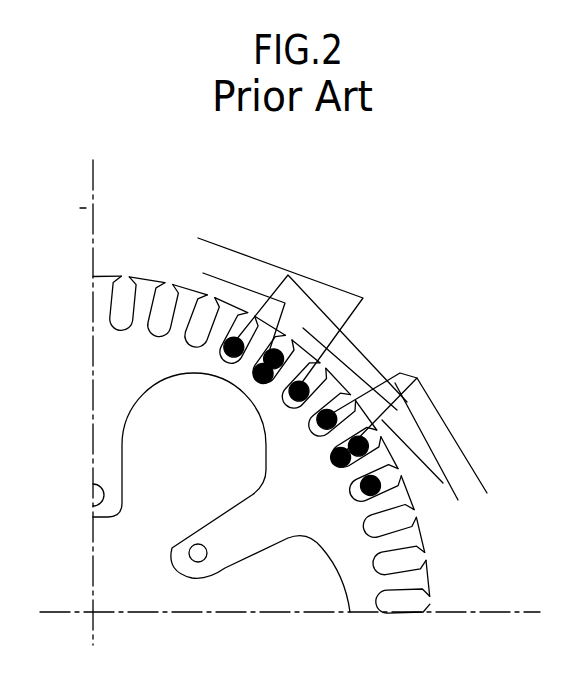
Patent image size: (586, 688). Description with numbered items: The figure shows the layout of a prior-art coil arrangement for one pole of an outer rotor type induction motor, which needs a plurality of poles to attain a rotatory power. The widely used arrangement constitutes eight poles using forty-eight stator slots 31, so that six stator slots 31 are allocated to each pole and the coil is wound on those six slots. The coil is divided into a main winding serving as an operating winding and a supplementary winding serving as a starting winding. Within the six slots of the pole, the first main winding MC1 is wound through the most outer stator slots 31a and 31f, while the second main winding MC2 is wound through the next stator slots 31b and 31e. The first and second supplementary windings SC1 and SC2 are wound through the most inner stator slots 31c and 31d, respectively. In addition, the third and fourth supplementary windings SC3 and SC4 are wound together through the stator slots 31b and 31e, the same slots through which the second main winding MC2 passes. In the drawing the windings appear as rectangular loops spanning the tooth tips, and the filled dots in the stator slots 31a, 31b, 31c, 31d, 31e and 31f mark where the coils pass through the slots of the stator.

The stator slot 31 is at (124, 293).
The stator slot 31a is at (232, 355).
The stator slot 31b is at (262, 378).
The stator slot 31c is at (290, 395).
The stator slot 31d is at (316, 426).
The stator slot 31e is at (336, 460).
The stator slot 31f is at (362, 490).
The first supplementary winding SC1 is at (265, 262).
The second supplementary winding SC2 is at (466, 449).
The third supplementary winding SC3 is at (212, 276).
The fourth supplementary winding SC4 is at (449, 485).
The first main winding MC1 is at (377, 363).
The second main winding MC2 is at (402, 373).